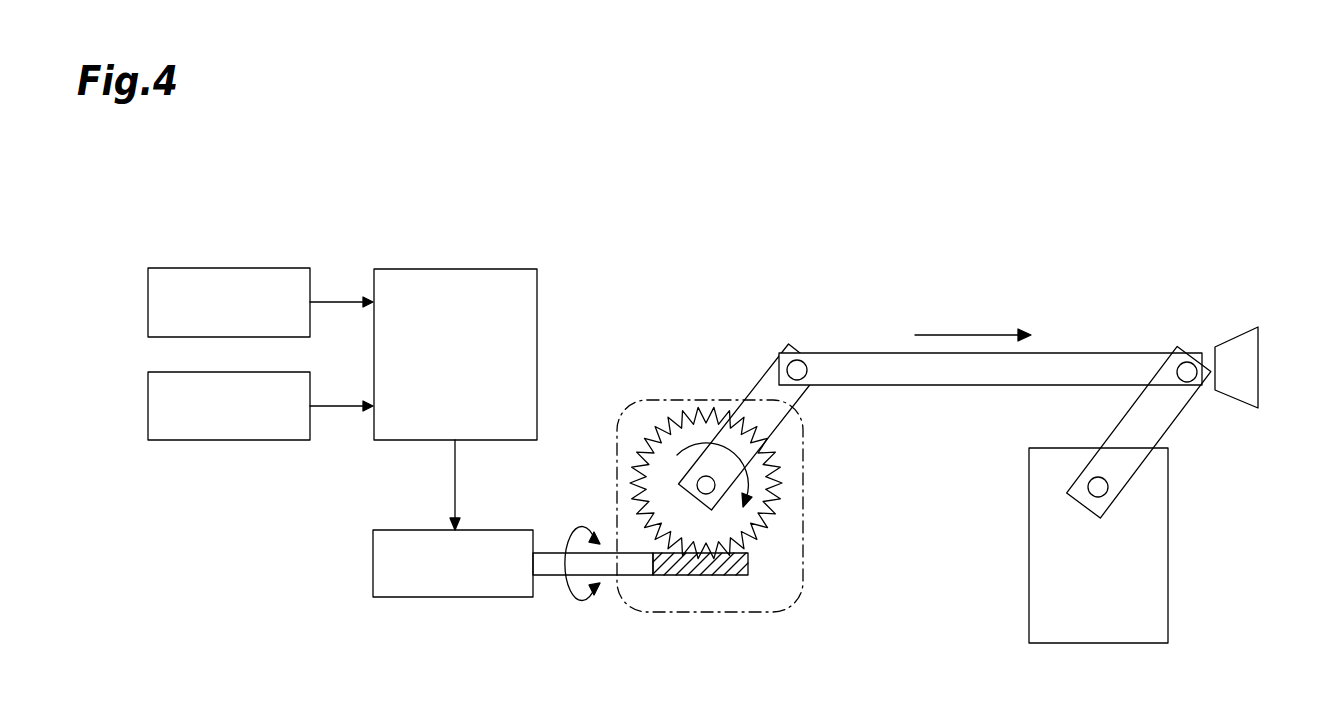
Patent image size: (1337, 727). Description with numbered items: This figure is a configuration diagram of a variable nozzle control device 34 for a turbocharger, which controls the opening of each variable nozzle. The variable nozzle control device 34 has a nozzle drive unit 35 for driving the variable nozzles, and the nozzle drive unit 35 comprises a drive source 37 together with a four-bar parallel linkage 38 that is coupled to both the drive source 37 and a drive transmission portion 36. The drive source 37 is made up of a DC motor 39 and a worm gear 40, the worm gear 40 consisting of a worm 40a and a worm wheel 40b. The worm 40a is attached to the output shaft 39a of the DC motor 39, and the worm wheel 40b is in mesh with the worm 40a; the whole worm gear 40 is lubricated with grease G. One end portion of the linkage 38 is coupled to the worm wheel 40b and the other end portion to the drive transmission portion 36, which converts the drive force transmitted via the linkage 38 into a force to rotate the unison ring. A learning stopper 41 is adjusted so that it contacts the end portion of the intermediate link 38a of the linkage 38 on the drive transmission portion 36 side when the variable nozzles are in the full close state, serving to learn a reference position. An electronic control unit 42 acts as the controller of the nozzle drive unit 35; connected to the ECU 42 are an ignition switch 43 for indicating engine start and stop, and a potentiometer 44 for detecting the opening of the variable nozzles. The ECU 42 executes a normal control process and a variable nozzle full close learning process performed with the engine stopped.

The variable nozzle control device 34 is at (736, 184).
The nozzle drive unit 35 is at (846, 292).
The drive transmission portion 36 is at (1153, 624).
The drive source 37 is at (553, 592).
The four-bar parallel linkage 38 is at (945, 406).
The intermediate link 38a is at (932, 376).
The DC motor 39 is at (424, 598).
The output shaft 39a is at (607, 566).
The worm gear 40 is at (782, 491).
The worm 40a is at (748, 568).
The worm wheel 40b is at (770, 478).
The learning stopper 41 is at (1247, 368).
The electronic control unit (ECU) 42 is at (507, 269).
The ignition (IG) switch 43 is at (148, 302).
The potentiometer 44 is at (148, 407).
The grease G is at (803, 452).